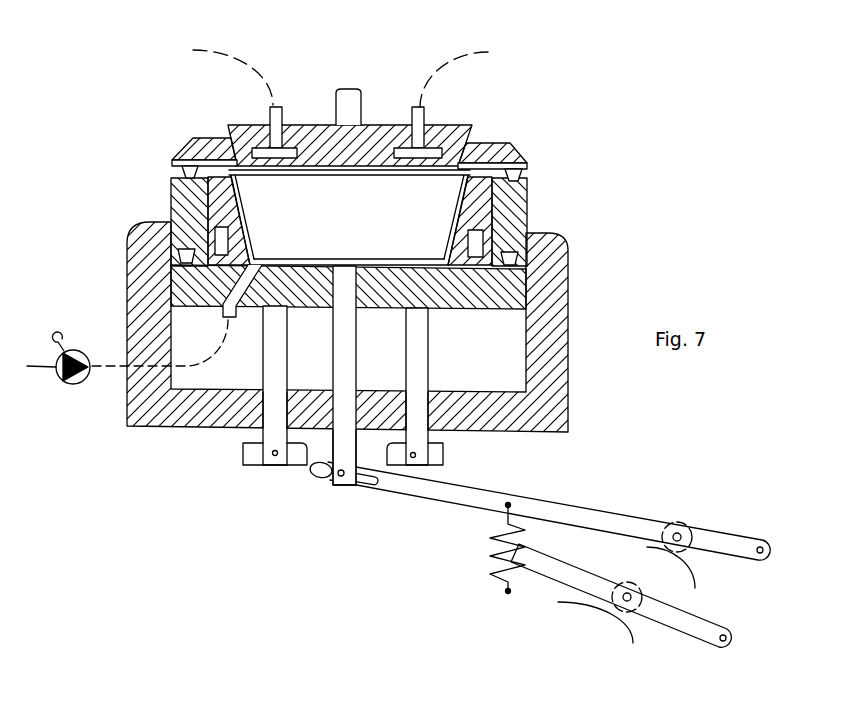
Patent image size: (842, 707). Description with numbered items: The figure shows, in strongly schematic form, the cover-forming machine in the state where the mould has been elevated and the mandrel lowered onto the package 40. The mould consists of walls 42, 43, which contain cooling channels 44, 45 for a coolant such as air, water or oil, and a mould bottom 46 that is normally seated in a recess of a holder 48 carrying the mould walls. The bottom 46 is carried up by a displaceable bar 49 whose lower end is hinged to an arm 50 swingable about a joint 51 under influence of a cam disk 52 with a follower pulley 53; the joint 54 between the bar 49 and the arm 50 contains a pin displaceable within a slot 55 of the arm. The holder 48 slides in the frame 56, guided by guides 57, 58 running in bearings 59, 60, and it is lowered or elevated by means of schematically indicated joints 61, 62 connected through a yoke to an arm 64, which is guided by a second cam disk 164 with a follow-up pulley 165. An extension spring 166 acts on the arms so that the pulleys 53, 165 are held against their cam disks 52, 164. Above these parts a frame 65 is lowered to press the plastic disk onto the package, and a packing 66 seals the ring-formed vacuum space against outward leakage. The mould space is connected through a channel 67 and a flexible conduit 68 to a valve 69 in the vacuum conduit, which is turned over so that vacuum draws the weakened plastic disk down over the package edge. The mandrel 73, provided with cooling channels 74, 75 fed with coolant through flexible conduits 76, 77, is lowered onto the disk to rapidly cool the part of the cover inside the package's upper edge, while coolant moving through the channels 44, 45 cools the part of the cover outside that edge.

The package 40 is at (349, 217).
The mould wall 42 is at (228, 212).
The mould wall 43 is at (472, 212).
The cooling channel 44 is at (221, 245).
The cooling channel 45 is at (478, 243).
The mould bottom 46 is at (320, 264).
The holder 48 is at (497, 297).
The displaceable bar 49 is at (345, 367).
The arm 50 is at (570, 513).
The joint 51 is at (768, 546).
The cam disk 52 is at (694, 572).
The follower pulley 53 is at (685, 522).
The joint 54 is at (341, 476).
The slot 55 is at (313, 473).
The frame 56 is at (555, 315).
The guide 57 is at (277, 356).
The guide 58 is at (418, 375).
The bearing 59 is at (262, 429).
The bearing 60 is at (428, 433).
The joint 61 is at (275, 456).
The joint 62 is at (444, 456).
The arm 64 is at (546, 565).
The frame 65 is at (512, 152).
The packing 66 is at (523, 172).
The channel 67 is at (237, 313).
The flexible conduit 68 is at (202, 356).
The valve 69 is at (75, 383).
The mandrel 73 is at (443, 137).
The cooling channel 74 is at (266, 154).
The cooling channel 75 is at (418, 156).
The flexible conduit 76 is at (258, 73).
The flexible conduit 77 is at (442, 72).
The second cam disk 164 is at (590, 603).
The follow-up pulley 165 is at (628, 582).
The extension spring 166 is at (500, 537).